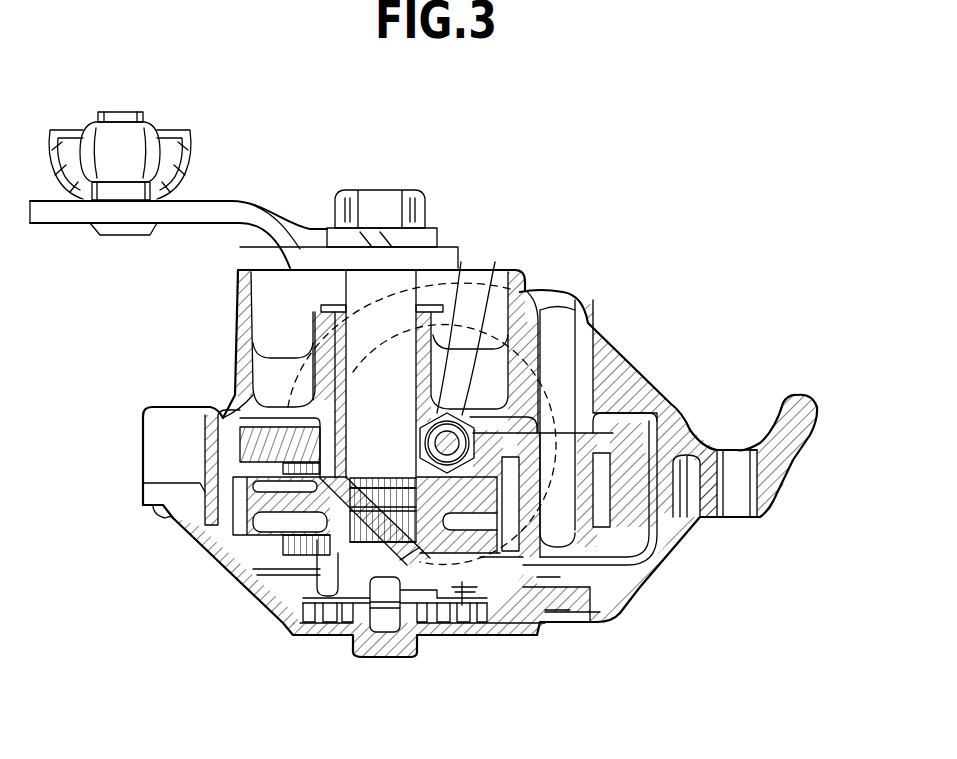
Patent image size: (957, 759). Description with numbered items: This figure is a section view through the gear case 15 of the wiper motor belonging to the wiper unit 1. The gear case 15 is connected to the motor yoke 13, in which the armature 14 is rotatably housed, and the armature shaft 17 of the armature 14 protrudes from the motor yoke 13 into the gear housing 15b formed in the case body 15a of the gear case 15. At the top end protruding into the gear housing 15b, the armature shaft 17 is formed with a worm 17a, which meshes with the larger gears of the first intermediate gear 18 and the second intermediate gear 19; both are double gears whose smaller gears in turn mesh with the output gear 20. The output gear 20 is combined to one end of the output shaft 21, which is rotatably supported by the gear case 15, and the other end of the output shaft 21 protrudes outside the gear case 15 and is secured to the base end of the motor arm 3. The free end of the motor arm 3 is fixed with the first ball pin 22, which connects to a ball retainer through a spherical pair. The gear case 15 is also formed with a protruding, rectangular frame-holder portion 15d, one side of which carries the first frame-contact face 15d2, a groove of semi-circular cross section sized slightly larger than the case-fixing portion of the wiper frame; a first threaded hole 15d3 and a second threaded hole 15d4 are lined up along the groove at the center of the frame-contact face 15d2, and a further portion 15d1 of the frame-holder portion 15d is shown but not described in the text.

The wiper unit 1 is at (612, 138).
The motor arm 3 is at (279, 200).
The motor yoke 13 is at (492, 287).
The armature 14 is at (577, 293).
The gear case 15 is at (233, 316).
The case body 15a is at (587, 393).
The gear housing 15b is at (227, 455).
The frame-holder portion 15d is at (807, 403).
The hook base portion 15d1 is at (680, 447).
The first frame-contact face 15d2 is at (798, 460).
The first threaded hole 15d3 is at (750, 470).
The second threaded hole 15d4 is at (728, 483).
The armature shaft 17 is at (461, 262).
The worm 17a is at (515, 290).
The first intermediate gear 18 is at (500, 557).
The second intermediate gear 19 is at (307, 553).
The output gear 20 is at (300, 520).
The output shaft 21 is at (365, 285).
The first ball pin 22 is at (134, 112).